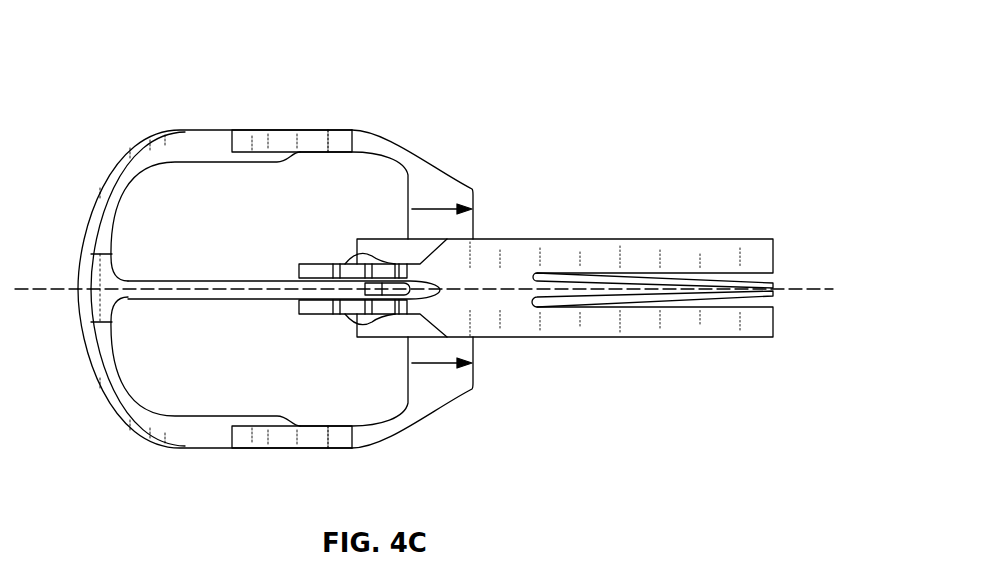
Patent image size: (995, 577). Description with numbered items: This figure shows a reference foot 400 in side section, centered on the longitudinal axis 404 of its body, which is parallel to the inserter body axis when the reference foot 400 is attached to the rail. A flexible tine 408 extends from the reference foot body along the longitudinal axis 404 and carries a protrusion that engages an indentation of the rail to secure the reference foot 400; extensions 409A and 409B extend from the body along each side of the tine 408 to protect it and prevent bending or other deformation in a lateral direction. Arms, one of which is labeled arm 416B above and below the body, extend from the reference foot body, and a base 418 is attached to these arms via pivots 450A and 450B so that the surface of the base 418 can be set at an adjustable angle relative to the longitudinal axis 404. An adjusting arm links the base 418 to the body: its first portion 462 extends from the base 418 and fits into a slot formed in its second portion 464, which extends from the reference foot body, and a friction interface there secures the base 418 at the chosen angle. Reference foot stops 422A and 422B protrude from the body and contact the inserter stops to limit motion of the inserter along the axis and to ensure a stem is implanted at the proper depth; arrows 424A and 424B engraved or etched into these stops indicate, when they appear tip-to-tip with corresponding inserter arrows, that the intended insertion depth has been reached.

The reference foot 400 is at (681, 64).
The longitudinal axis 404 is at (813, 287).
The tine 408 is at (545, 292).
The extension 409A is at (750, 322).
The extension 409B is at (753, 257).
The arm 416B is at (390, 150).
The base 418 is at (102, 198).
The reference foot stop 422A is at (430, 382).
The reference foot stop 422B is at (435, 190).
The arrow 424A is at (463, 364).
The arrow 424B is at (462, 202).
The pivot 450A is at (250, 471).
The pivot 450B is at (240, 112).
The first portion 462 is at (177, 281).
The second portion 464 is at (305, 244).